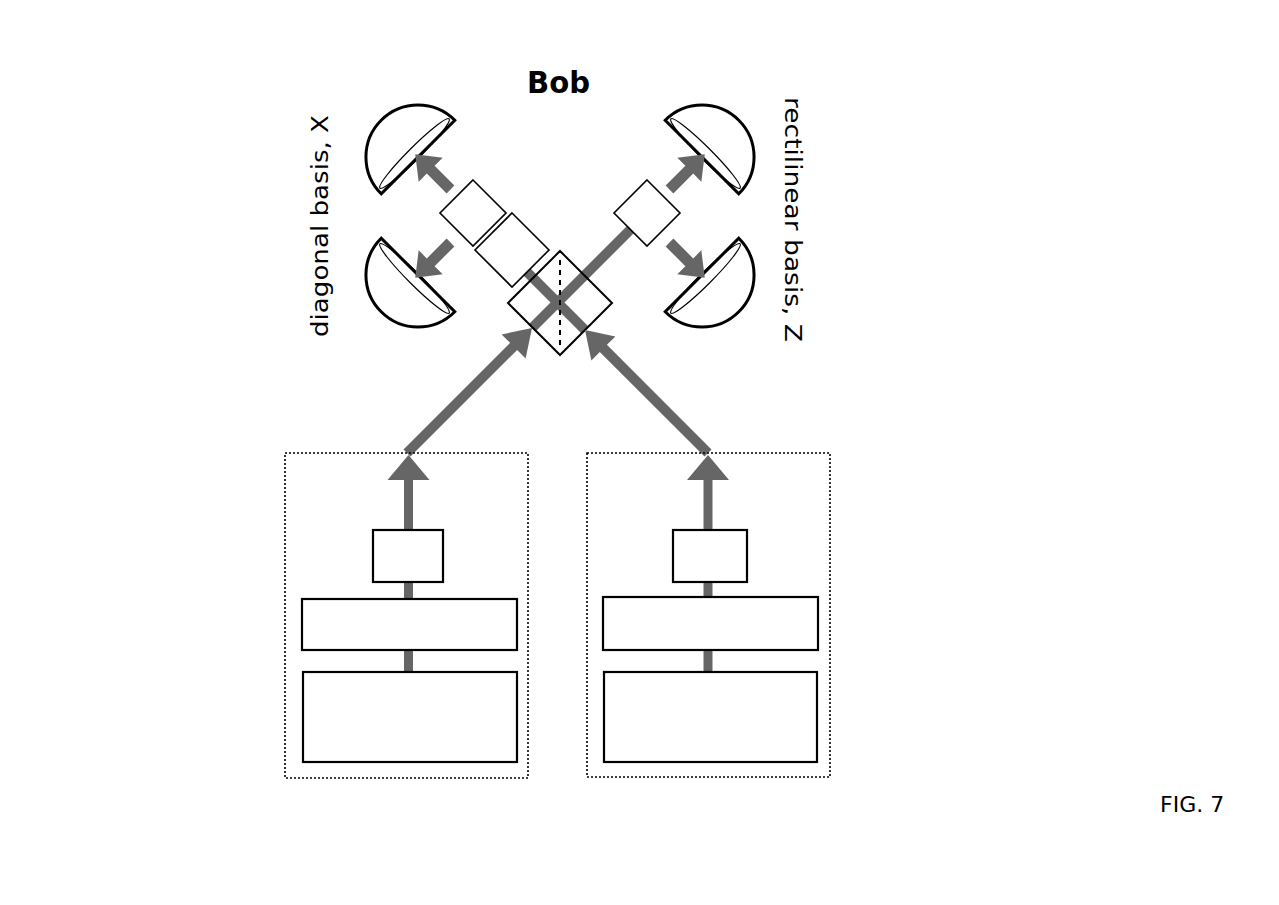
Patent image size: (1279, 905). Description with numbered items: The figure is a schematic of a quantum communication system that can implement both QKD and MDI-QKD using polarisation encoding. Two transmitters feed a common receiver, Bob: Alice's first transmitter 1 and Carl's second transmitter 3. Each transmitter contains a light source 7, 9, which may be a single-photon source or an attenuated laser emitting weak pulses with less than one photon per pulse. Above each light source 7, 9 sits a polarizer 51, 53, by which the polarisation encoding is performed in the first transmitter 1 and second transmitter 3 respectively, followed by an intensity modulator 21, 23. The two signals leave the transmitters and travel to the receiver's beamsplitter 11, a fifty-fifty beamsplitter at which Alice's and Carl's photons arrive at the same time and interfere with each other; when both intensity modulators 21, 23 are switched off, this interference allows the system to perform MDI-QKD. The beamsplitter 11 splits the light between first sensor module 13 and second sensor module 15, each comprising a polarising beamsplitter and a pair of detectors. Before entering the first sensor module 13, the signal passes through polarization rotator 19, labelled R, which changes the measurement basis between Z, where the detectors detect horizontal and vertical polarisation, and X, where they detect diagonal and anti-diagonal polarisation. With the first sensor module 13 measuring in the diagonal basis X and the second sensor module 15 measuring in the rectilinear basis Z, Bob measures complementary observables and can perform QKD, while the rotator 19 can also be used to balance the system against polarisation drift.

The first transmitter 1 is at (403, 782).
The second transmitter 3 is at (765, 783).
The light source 7 is at (302, 718).
The light source 9 is at (817, 718).
The beamsplitter 11 is at (513, 318).
The first sensor module 13 is at (353, 93).
The second sensor module 15 is at (765, 78).
The polarization rotator 19 is at (535, 228).
The intensity modulator 21 is at (362, 558).
The intensity modulator 23 is at (747, 554).
The polarizer 51 is at (302, 622).
The polarizer 53 is at (820, 622).